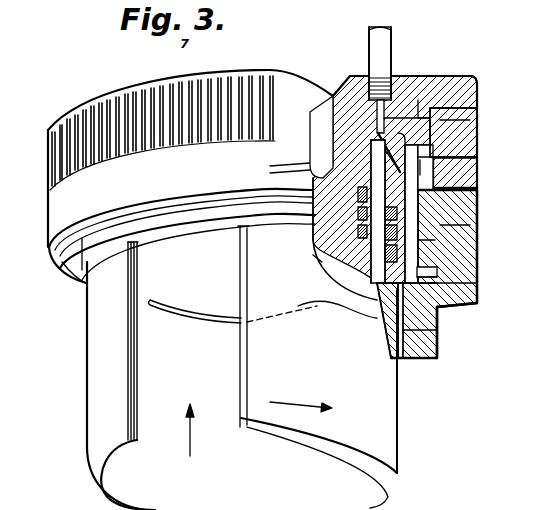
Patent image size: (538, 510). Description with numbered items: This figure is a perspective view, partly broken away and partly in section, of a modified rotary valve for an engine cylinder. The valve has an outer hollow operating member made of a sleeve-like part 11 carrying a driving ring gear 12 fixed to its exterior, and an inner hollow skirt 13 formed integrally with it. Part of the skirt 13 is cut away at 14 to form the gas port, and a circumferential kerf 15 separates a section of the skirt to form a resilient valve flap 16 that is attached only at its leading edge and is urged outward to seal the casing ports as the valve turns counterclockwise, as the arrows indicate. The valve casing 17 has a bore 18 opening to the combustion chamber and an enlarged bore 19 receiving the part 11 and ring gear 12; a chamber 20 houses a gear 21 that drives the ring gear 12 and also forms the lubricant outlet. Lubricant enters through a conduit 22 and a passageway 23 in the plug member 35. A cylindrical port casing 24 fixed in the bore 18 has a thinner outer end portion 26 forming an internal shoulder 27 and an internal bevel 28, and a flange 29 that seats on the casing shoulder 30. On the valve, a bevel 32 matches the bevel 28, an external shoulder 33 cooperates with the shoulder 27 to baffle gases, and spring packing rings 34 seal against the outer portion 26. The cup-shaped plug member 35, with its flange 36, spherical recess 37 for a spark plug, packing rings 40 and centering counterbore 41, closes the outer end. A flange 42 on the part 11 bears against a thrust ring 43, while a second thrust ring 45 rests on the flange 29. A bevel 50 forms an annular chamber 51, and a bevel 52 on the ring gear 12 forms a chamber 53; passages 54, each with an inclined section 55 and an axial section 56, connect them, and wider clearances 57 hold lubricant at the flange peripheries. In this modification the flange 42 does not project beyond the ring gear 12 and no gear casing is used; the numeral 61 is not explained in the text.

The sleeve-like part 11 is at (372, 143).
The driving ring gear 12 is at (108, 116).
The inner hollow skirt 13 is at (106, 380).
The cutaway section 14 is at (191, 441).
The kerf 15 is at (192, 316).
The valve flap 16 is at (258, 368).
The valve casing 17 is at (468, 312).
The bore 18 is at (412, 344).
The enlarged bore 19 is at (467, 211).
The chamber 20 is at (468, 157).
The gear 21 is at (466, 174).
The lubricant conduit 22 is at (380, 44).
The passageway 23 is at (378, 112).
The port casing 24 is at (402, 333).
The outer end portion of port casing 26 is at (440, 240).
The internal shoulder 27 is at (458, 311).
The internal bevel 28 is at (478, 189).
The flange 29 is at (425, 275).
The internal shoulder of valve casing 30 is at (446, 291).
The bevel 32 is at (323, 186).
The external shoulder 33 is at (83, 270).
The spring packing rings 34 is at (97, 232).
The plug member 35 is at (332, 204).
The flange of plug member 36 is at (466, 93).
The spherically recessed inner surface 37 is at (320, 260).
The packing rings 40 is at (360, 214).
The counterbore 41 is at (420, 100).
The flange 42 is at (452, 120).
The thrust ring 43 is at (434, 110).
The second thrust ring 45 is at (434, 263).
The bevel 50 is at (300, 176).
The annular groove 51 is at (386, 142).
The bevel 52 is at (70, 266).
The annular groove 53 is at (356, 300).
The passages 54 is at (385, 172).
The inclined section 55 is at (392, 165).
The axial section 56 is at (360, 232).
The clearances 57 is at (428, 162).
The wall 61 is at (475, 225).